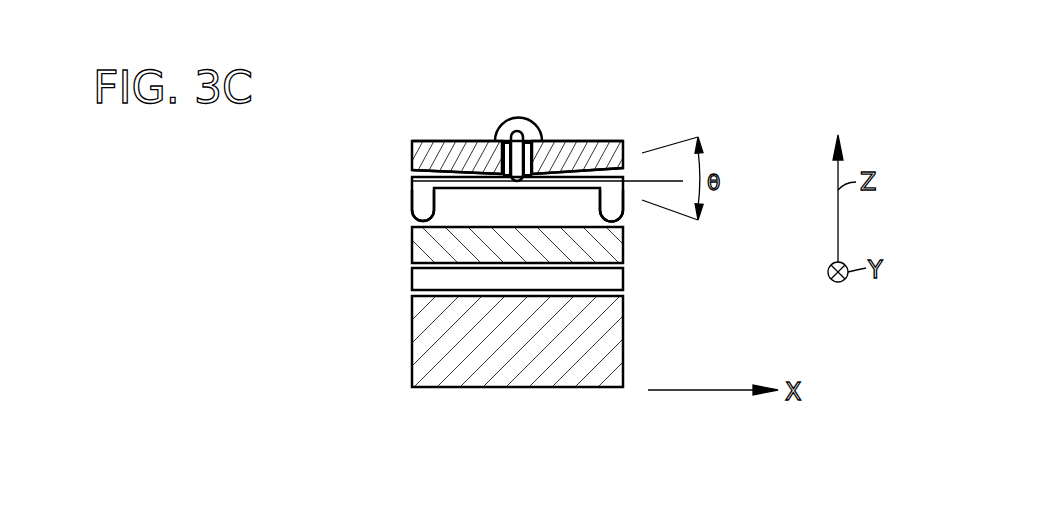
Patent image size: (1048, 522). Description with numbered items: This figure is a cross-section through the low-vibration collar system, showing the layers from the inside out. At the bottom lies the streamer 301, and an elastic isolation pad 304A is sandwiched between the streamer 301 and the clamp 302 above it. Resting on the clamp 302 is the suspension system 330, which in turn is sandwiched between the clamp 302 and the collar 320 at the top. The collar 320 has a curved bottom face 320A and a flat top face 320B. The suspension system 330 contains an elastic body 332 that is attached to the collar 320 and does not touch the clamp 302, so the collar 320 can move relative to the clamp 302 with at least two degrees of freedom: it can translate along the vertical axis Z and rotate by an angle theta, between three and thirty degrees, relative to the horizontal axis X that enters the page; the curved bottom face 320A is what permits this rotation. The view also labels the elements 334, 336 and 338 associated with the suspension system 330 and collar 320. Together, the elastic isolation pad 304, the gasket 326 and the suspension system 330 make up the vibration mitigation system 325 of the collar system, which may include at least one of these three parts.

The streamer 301 is at (630, 333).
The clamp 302 is at (640, 242).
The elastic isolation pad 304 is at (968, 11).
The elastic isolation pad 304A is at (400, 278).
The collar 320 is at (424, 132).
The bottom face of the collar 320A is at (419, 169).
The top face of the collar 320B is at (444, 140).
The vibration mitigation system 325 is at (931, 1).
The gasket 326 is at (968, 39).
The suspension system 330 is at (372, 177).
The body 332 is at (461, 188).
The left leg of frame 334 is at (400, 200).
The right leg of frame 336 is at (613, 212).
The pin 338 is at (520, 118).